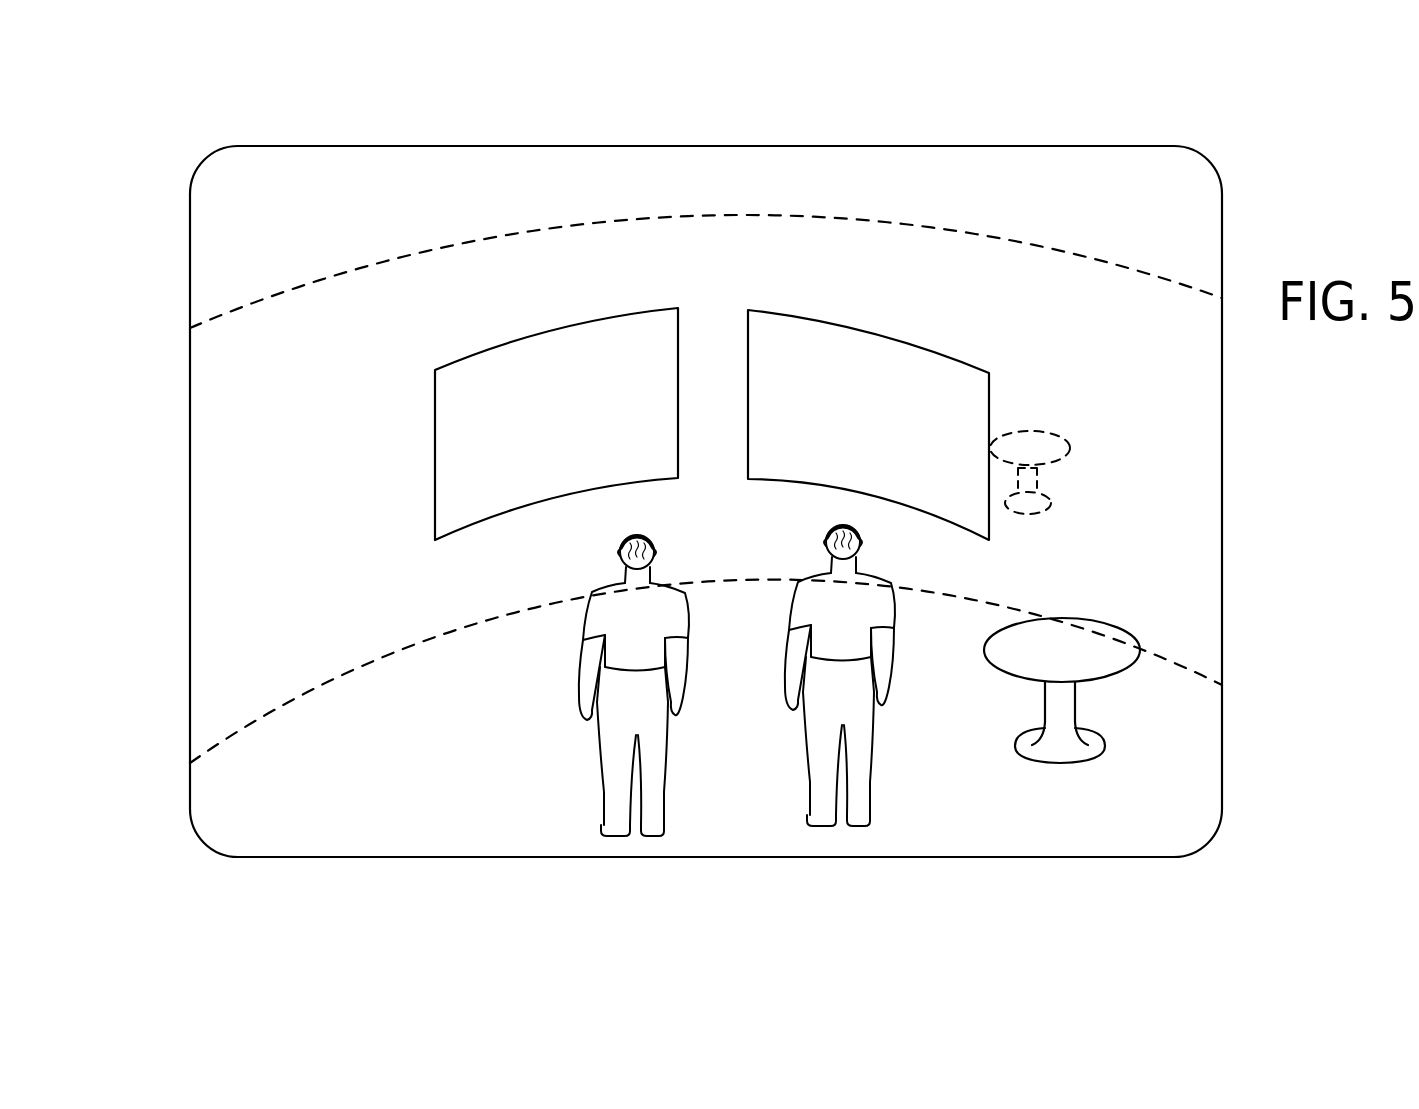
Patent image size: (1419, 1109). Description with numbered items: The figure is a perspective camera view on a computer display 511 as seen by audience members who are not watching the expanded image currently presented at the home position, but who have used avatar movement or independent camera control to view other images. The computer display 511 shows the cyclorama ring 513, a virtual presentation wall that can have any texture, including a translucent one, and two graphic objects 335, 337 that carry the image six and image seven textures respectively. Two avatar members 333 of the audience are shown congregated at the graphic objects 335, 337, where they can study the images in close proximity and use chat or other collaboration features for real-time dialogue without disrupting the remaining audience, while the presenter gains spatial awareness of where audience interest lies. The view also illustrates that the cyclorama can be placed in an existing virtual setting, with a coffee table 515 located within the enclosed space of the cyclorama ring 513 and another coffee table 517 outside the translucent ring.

The computer display 511 is at (332, 147).
The cyclorama ring 513 is at (243, 612).
The avatar members 333 is at (662, 735).
The graphic object 335 is at (590, 317).
The graphic object 337 is at (897, 332).
The coffee table 515 is at (1078, 630).
The coffee table 517 is at (1050, 432).